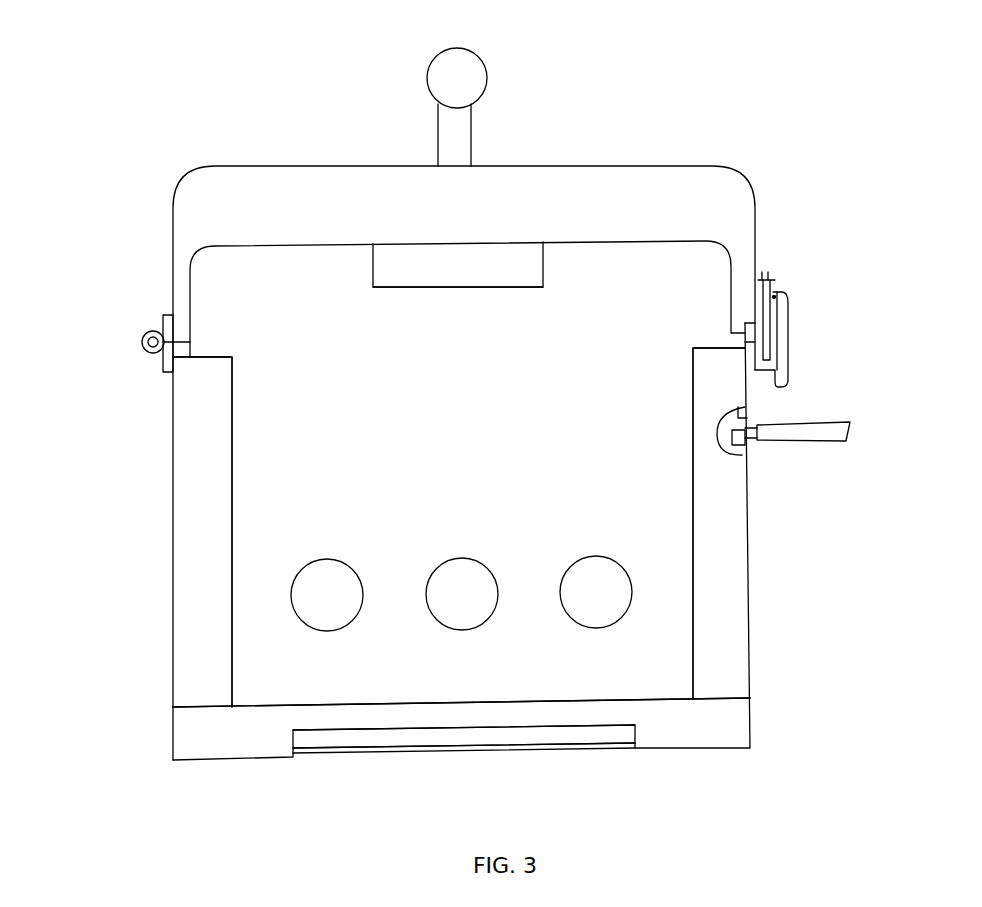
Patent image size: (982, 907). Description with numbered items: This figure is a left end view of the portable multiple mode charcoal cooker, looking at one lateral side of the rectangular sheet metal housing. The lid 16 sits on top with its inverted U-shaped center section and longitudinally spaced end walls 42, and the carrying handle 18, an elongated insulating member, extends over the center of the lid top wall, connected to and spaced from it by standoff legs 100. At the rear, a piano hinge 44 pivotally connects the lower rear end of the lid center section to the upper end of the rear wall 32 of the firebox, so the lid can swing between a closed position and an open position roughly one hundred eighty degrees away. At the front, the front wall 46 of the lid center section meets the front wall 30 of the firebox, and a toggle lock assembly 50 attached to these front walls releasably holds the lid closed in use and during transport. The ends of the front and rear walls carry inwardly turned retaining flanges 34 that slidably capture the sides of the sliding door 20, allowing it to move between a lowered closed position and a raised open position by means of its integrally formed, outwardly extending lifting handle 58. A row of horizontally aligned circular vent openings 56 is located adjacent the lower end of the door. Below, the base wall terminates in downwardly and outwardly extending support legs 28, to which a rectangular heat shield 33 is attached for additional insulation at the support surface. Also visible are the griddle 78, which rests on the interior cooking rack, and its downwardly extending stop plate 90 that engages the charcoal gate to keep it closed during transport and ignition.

The lid 16 is at (175, 195).
The carrying handle 18 is at (442, 70).
The standoff legs 100 is at (457, 130).
The end walls 42 is at (703, 197).
The front wall 46 is at (755, 232).
The sliding doors 20 is at (543, 287).
The lifting handles 58 is at (435, 287).
The toggle lock assembly 50 is at (788, 320).
The piano hinge 44 is at (133, 350).
The griddle 78 is at (833, 430).
The stop plate 90 is at (745, 442).
The vent openings 56 is at (462, 575).
The rear wall 32 is at (178, 578).
The front wall 30 is at (752, 582).
The retaining flanges 34 is at (195, 673).
The support legs 28 is at (732, 720).
The heat shield 33 is at (450, 753).